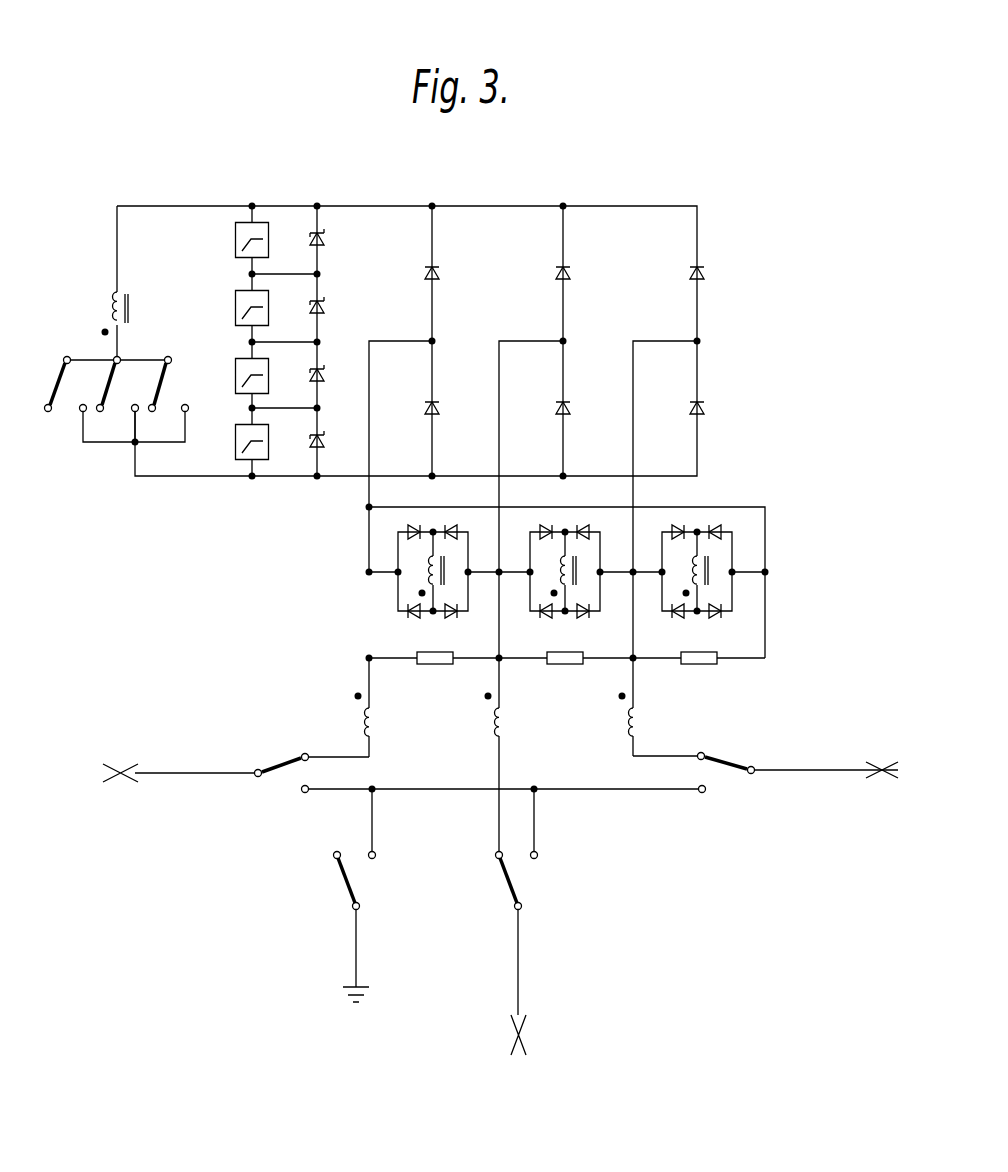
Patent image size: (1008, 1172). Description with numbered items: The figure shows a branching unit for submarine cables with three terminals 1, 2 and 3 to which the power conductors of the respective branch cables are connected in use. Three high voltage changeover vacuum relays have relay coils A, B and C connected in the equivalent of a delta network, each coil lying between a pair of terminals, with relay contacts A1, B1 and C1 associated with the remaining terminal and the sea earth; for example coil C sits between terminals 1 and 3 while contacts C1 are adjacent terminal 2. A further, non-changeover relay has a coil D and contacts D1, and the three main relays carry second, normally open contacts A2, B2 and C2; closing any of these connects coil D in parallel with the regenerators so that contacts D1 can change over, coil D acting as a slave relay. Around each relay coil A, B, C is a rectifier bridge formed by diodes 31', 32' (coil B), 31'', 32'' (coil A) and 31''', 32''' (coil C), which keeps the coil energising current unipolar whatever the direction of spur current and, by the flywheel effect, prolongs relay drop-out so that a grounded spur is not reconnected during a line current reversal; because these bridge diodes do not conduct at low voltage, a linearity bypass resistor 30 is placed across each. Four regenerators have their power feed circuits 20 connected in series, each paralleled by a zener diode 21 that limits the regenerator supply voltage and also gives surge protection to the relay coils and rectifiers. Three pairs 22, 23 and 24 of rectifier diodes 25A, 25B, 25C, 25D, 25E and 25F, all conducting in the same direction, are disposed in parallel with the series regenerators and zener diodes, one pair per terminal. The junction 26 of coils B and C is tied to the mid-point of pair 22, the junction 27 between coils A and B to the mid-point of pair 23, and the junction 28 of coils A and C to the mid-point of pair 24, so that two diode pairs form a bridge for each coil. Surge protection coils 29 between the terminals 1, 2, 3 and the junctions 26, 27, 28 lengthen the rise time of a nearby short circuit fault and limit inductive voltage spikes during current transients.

The terminal 1 is at (120, 765).
The terminal 2 is at (530, 1036).
The terminal 3 is at (880, 762).
The regenerator power feed circuit 20 is at (235, 241).
The zener diode 21 is at (325, 241).
The pair of rectifier diodes 22 is at (438, 338).
The pair of rectifier diodes 23 is at (569, 338).
The pair of rectifier diodes 24 is at (703, 338).
The rectifier diode 25A is at (440, 274).
The rectifier diode 25B is at (442, 410).
The rectifier diode 25C is at (571, 274).
The rectifier diode 25D is at (573, 410).
The rectifier diode 25E is at (705, 274).
The rectifier diode 25F is at (707, 410).
The junction 26 is at (368, 507).
The junction 27 is at (500, 570).
The junction 28 is at (634, 570).
The surge protection coil 29 is at (366, 713).
The linearity bypass resistor 30 is at (436, 665).
The rectifier bridge diodes 31' is at (428, 510).
The rectifier bridge diodes 31'' is at (559, 510).
The rectifier bridge diodes 31''' is at (691, 510).
The rectifier bridge diodes 32' is at (424, 627).
The rectifier bridge diodes 32'' is at (555, 627).
The rectifier bridge diodes 32''' is at (687, 627).
The relay coil A is at (565, 571).
The relay coil B is at (433, 571).
The relay coil C is at (697, 571).
The relay coil D is at (108, 314).
The relay contacts A1 is at (287, 790).
The relay contacts B1 is at (719, 790).
The relay contacts C1 is at (521, 934).
The relay contacts D1 is at (362, 927).
The relay contacts A2 is at (44, 384).
The relay contacts B2 is at (95, 384).
The relay contacts C2 is at (146, 384).